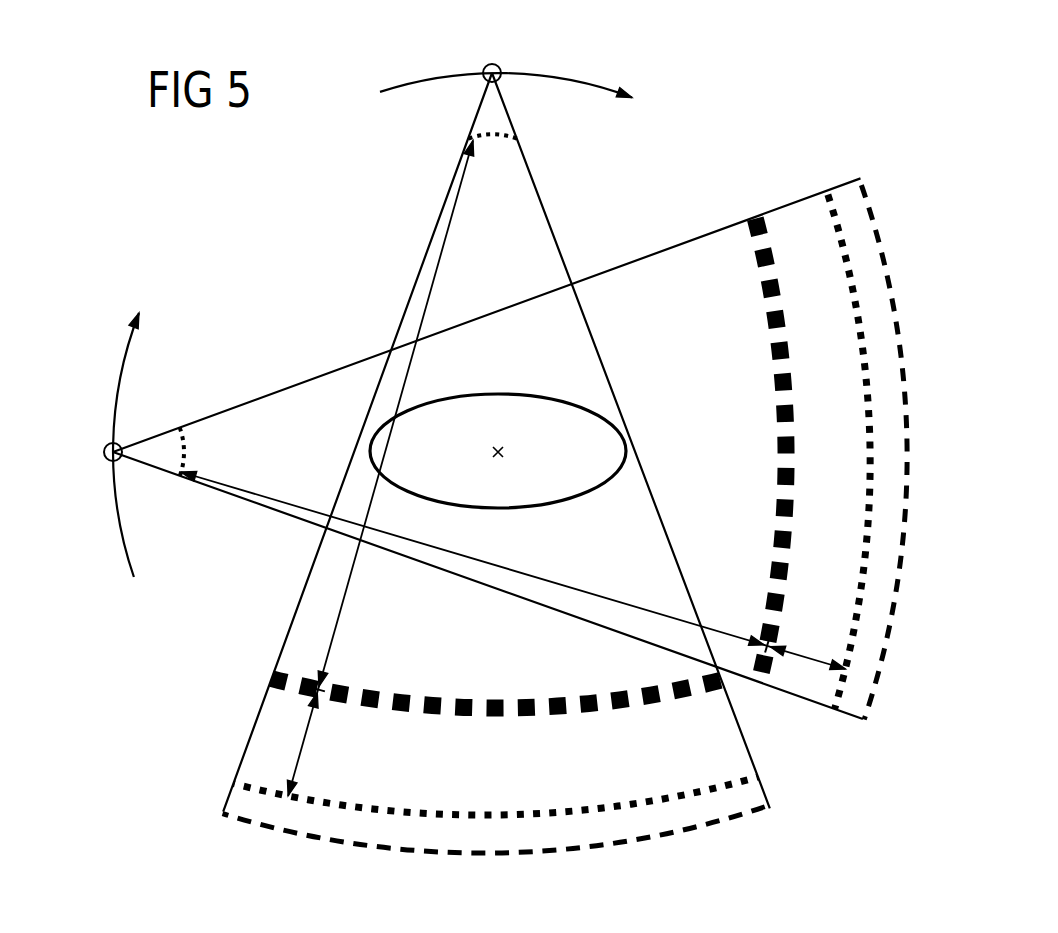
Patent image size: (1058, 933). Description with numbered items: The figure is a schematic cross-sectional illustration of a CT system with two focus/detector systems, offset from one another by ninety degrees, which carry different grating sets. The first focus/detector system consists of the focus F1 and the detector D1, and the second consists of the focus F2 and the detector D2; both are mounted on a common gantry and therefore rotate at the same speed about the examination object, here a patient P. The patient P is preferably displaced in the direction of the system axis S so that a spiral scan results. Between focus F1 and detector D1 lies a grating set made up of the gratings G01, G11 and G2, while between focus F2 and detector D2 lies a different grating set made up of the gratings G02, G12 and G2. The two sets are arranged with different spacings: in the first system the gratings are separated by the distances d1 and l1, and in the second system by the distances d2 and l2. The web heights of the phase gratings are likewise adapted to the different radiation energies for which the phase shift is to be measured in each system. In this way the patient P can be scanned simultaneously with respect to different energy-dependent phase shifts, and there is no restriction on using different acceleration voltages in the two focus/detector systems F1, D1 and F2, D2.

The focus of the first focus/detector system F1 is at (104, 452).
The focus of the second focus/detector system F2 is at (492, 63).
The source grating of the first focus/detector system G01 is at (184, 427).
The source grating of the second focus/detector system G02 is at (468, 142).
The phase grating of the first focus/detector system G11 is at (294, 692).
The phase grating of the second focus/detector system G12 is at (757, 218).
The analyzer grating G2 is at (200, 748).
The detector of the first focus/detector system D1 is at (866, 186).
The detector of the second focus/detector system D2 is at (232, 821).
The patient P is at (508, 393).
The system axis S is at (503, 452).
The grating distance of the first system l1 is at (475, 562).
The grating distance of the second system l2 is at (405, 415).
The grating distance of the first system d1 is at (805, 657).
The grating distance of the second system d2 is at (300, 757).